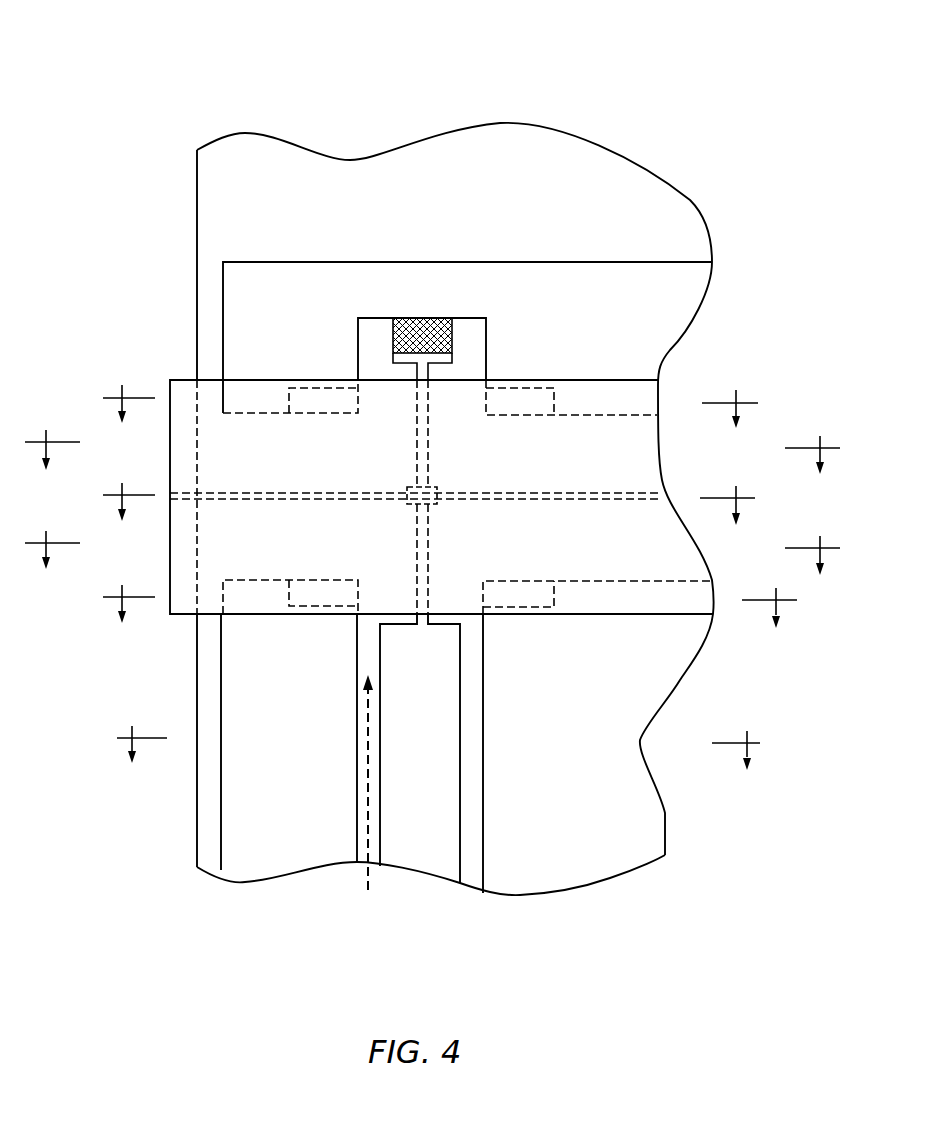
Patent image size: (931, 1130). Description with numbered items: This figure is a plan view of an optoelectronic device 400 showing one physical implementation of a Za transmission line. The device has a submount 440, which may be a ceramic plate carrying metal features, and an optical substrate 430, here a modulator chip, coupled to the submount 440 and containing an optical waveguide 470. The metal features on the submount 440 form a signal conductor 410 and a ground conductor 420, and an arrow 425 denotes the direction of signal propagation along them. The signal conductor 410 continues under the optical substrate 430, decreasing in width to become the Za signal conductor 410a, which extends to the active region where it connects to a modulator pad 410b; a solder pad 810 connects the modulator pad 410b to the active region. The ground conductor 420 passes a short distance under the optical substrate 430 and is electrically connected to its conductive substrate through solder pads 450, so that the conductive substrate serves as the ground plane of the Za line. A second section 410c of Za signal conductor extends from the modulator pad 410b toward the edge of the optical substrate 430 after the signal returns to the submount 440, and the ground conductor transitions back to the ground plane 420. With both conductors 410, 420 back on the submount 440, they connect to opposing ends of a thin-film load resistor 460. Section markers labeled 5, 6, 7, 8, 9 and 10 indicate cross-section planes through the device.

The optoelectronic device 400 is at (199, 53).
The signal conductor 410 is at (458, 666).
The Za signal conductor 410a is at (416, 552).
The modulator pad 410b is at (437, 490).
The second section of Za signal conductor 410c is at (416, 458).
The solder pad 810 is at (484, 478).
The ground conductor 420 is at (235, 303).
The arrow 425 is at (365, 787).
The optical substrate 430 is at (610, 616).
The submount 440 is at (197, 190).
The solder pads 450 is at (320, 390).
The load resistor 460 is at (424, 318).
The optical waveguide 470 is at (238, 493).
The section line FIG. 5 is at (438, 764).
The section line FIG. 6 is at (450, 622).
The section line FIG. 7 is at (432, 568).
The section line FIG. 8 is at (429, 520).
The section line FIG. 9 is at (432, 467).
The section line FIG. 10 is at (430, 422).